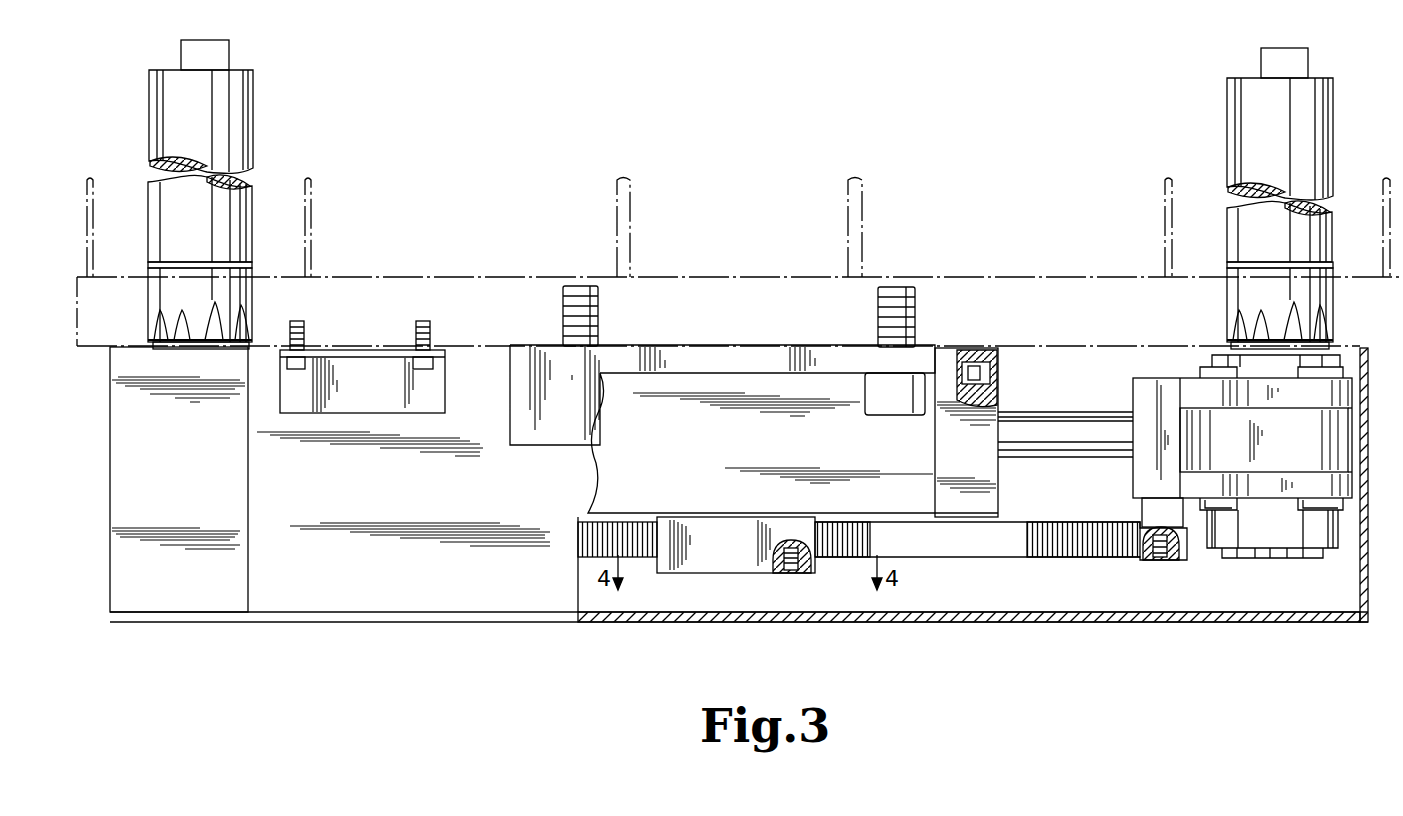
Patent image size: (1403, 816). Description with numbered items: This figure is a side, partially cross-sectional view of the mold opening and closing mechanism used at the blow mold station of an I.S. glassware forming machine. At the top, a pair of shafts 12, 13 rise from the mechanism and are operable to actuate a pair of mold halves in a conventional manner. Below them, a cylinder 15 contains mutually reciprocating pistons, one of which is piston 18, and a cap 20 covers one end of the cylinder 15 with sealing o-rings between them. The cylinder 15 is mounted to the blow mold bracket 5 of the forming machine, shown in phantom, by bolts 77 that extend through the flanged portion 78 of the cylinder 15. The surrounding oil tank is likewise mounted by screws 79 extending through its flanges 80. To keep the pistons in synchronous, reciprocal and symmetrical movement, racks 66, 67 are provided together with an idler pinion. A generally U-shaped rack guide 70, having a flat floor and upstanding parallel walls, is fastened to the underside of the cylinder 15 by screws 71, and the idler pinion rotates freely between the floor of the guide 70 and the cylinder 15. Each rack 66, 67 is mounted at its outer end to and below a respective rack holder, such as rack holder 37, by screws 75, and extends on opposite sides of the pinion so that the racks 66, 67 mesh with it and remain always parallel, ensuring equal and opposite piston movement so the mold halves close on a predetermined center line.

The blow mold bracket 5 is at (470, 276).
The shaft 12 is at (253, 118).
The shaft 13 is at (1333, 120).
The cylinder 15 is at (705, 350).
The piston 18 is at (1055, 460).
The cap 20 is at (998, 485).
The rack holder 37 is at (1132, 388).
The rack 66 is at (645, 560).
The rack 67 is at (990, 560).
The rack guide 70 is at (697, 575).
The screw 71 is at (800, 575).
The screw 75 is at (1160, 562).
The bolt 77 is at (598, 298).
The flanged portion 78 is at (758, 350).
The screw 79 is at (304, 325).
The flange 80 is at (445, 372).